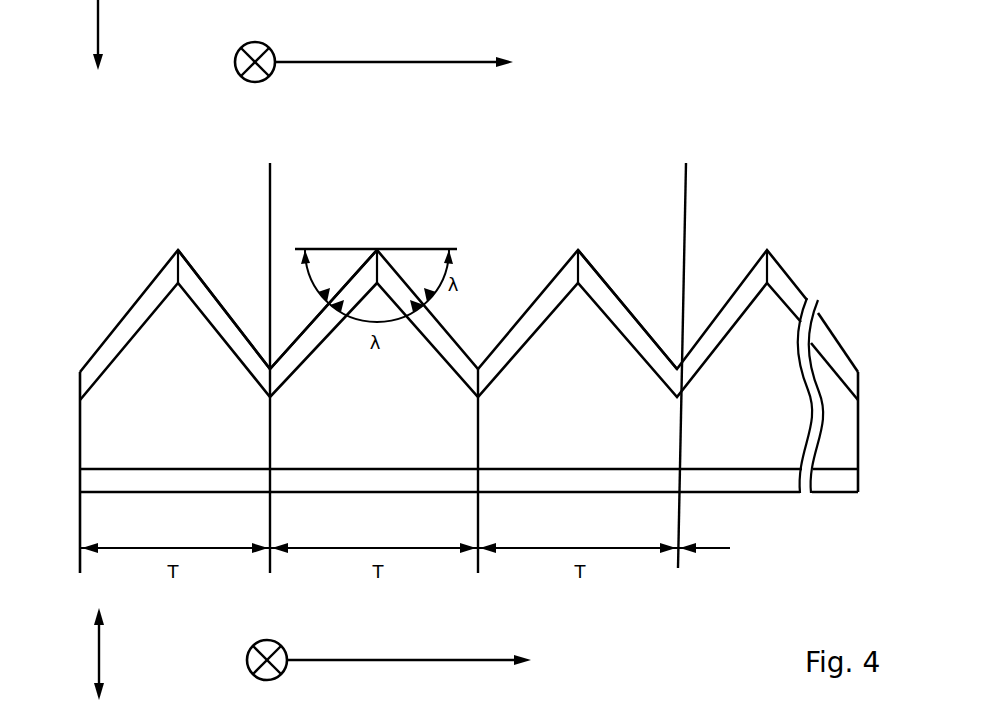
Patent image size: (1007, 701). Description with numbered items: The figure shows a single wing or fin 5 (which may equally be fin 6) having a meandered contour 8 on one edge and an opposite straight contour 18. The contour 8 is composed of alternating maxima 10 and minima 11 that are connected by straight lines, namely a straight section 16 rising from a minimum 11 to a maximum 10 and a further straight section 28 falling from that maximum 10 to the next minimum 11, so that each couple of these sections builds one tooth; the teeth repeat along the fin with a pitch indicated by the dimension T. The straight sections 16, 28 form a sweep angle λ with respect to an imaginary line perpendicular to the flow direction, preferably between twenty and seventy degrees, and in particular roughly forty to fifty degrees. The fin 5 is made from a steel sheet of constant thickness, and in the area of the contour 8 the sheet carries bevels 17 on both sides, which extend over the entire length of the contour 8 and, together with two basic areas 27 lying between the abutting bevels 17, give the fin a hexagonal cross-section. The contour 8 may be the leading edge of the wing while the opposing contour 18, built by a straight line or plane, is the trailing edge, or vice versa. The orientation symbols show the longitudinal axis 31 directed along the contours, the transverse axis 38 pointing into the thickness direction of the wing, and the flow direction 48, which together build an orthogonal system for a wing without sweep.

The fin 5 is at (440, 357).
The fin 6 is at (55, 151).
The contour 8 is at (144, 293).
The maximum 10 is at (377, 250).
The minimum 11 is at (478, 367).
The straight section 16 is at (348, 282).
The bevel 17 is at (115, 337).
The opposing contour 18 is at (773, 492).
The basic area 27 is at (368, 427).
The straight section 28 is at (209, 292).
The longitudinal axis 31 is at (403, 350).
The transverse axis 38 is at (246, 361).
The flow direction 48 is at (86, 350).